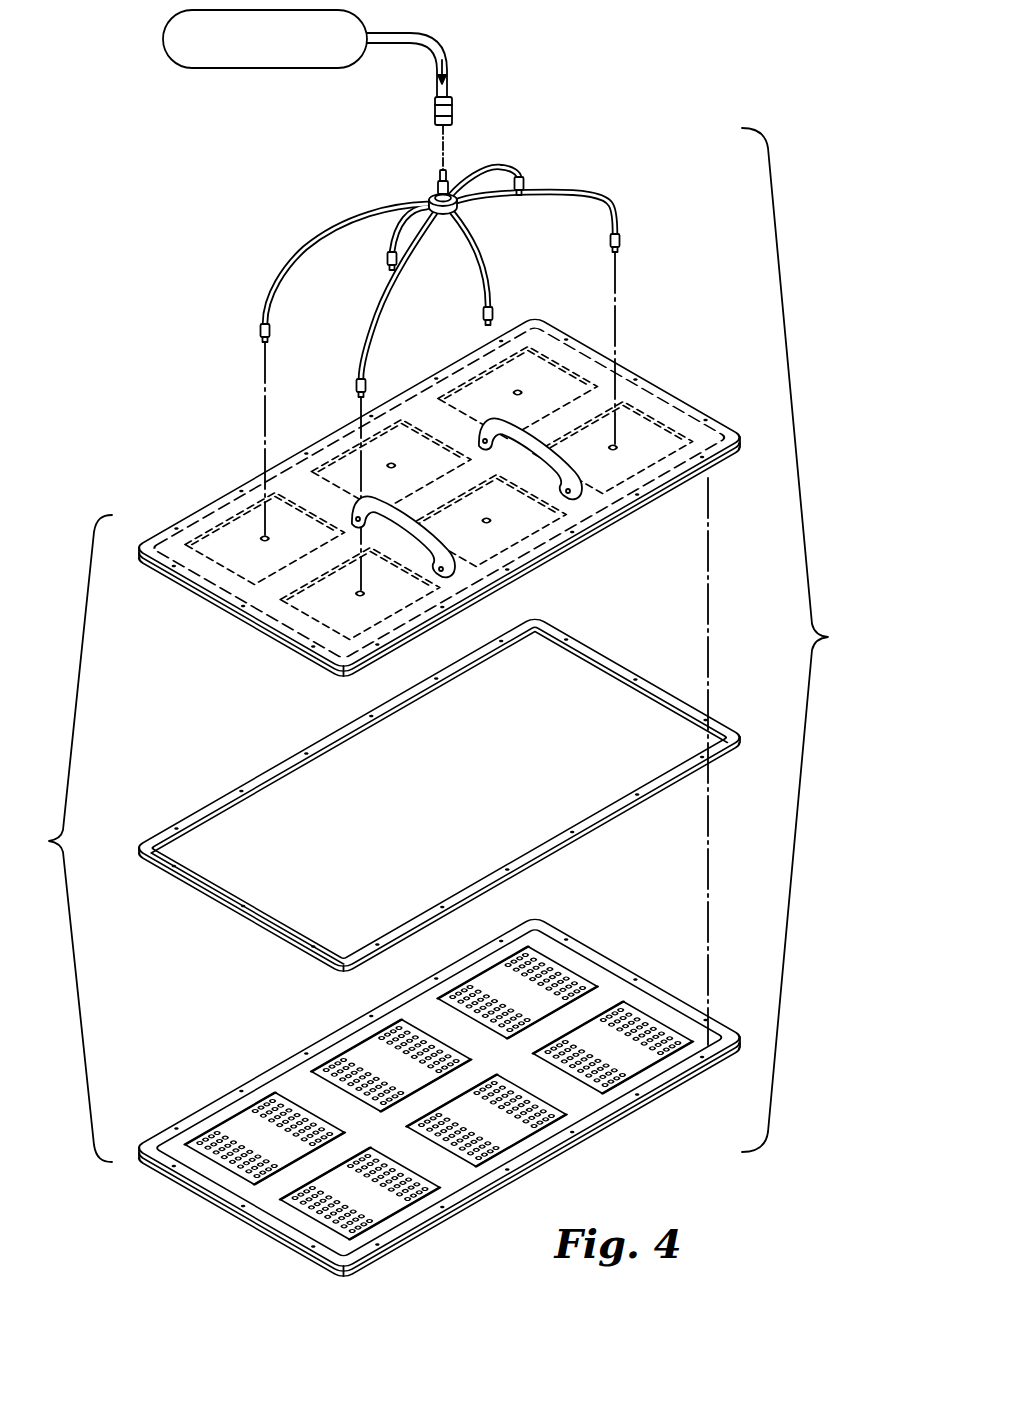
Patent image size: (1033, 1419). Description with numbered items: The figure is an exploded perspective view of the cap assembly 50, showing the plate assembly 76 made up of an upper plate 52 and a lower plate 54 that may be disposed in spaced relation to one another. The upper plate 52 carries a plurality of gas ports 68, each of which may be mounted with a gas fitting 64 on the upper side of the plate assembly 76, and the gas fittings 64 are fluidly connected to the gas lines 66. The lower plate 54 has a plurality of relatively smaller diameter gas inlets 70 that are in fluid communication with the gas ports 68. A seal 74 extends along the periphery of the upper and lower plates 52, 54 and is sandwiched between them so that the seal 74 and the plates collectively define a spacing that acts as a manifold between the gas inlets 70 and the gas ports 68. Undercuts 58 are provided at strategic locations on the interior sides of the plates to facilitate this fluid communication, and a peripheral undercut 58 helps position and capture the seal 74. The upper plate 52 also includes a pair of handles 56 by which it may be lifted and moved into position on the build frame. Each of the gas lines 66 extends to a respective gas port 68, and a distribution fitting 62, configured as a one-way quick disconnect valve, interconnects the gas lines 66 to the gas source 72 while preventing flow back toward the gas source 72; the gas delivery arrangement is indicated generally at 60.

The cap assembly 50 is at (802, 640).
The upper plate 52 is at (157, 493).
The lower plate 54 is at (178, 1090).
The handles 56 is at (580, 490).
The undercuts 58 is at (322, 466).
The gas distribution system 60 is at (500, 122).
The distribution fitting 62 is at (435, 196).
The gas fittings 64 is at (525, 183).
The gas lines 66 is at (452, 80).
The gas ports 68 is at (394, 462).
The gas inlets 70 is at (530, 957).
The gas source 72 is at (318, 66).
The seal 74 is at (163, 832).
The plate assembly 76 is at (69, 838).